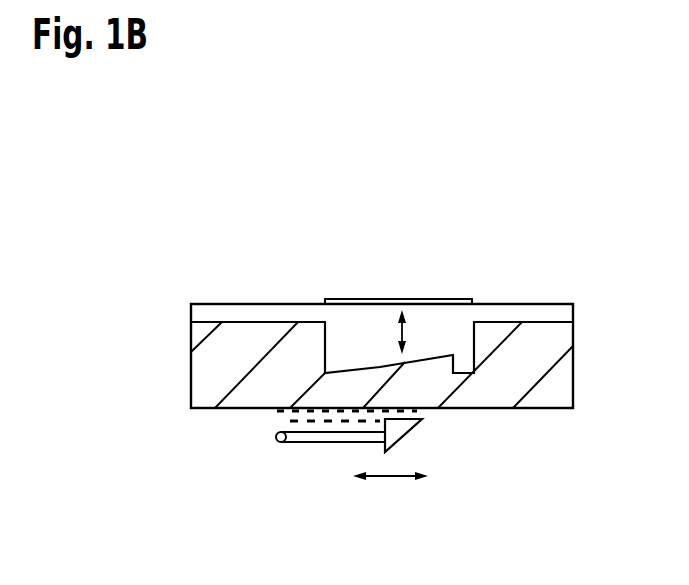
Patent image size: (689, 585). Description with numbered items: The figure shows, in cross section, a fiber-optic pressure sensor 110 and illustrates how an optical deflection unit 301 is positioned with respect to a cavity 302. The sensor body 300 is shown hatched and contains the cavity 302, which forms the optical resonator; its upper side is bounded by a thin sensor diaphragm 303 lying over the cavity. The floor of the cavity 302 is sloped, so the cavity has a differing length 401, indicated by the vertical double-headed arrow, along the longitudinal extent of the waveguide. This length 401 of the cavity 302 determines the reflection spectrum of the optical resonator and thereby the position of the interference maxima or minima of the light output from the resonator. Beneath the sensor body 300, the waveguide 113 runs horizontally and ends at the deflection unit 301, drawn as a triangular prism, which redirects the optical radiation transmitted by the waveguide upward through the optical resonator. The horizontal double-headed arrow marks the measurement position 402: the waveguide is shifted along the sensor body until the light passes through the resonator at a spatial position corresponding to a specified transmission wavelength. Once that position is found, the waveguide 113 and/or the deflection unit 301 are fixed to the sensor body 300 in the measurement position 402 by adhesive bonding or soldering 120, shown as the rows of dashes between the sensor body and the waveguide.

The sensor arrangement 110 is at (288, 160).
The sensor body 300 is at (543, 395).
The cavity 302 is at (388, 268).
The sensor diaphragm 303 is at (345, 300).
The length 401 is at (403, 335).
The adhesive bonding or soldering 120 is at (275, 421).
The waveguide 113 is at (308, 443).
The optical deflection unit 301 is at (405, 428).
The measurement position 402 is at (390, 478).